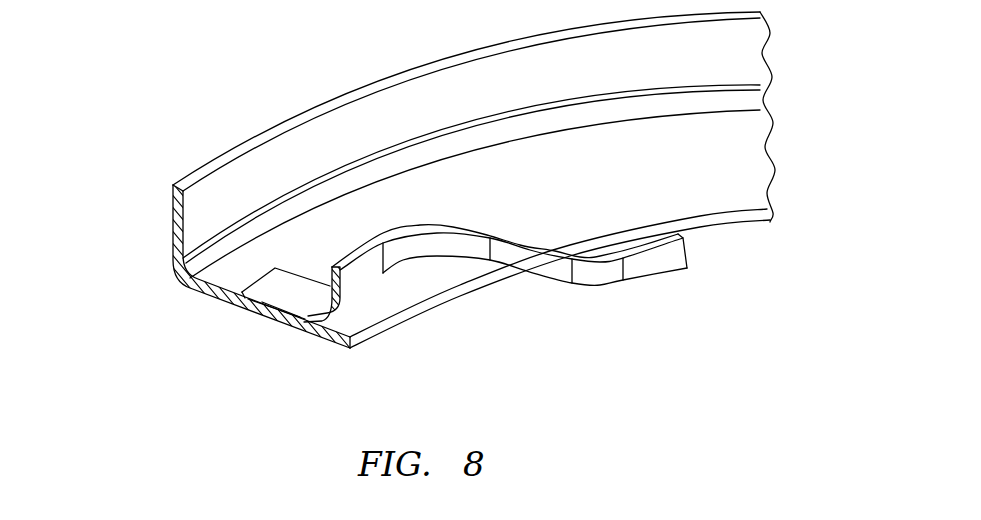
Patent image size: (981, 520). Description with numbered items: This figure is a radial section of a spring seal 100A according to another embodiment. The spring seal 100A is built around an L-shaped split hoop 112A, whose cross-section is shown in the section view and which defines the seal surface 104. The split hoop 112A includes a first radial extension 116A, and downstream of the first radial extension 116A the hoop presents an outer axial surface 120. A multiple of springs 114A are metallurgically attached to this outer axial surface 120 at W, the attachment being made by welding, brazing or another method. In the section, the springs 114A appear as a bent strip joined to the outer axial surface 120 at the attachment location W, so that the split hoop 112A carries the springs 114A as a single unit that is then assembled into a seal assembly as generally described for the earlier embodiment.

The spring seal 100A is at (155, 127).
The first radial extension 116A is at (240, 147).
The L-shaped split hoop 112A is at (403, 128).
The outer axial surface 120 is at (615, 186).
The second seal surface 104 is at (170, 231).
The springs 114A is at (650, 272).
The metallurgical attachment location W is at (265, 322).